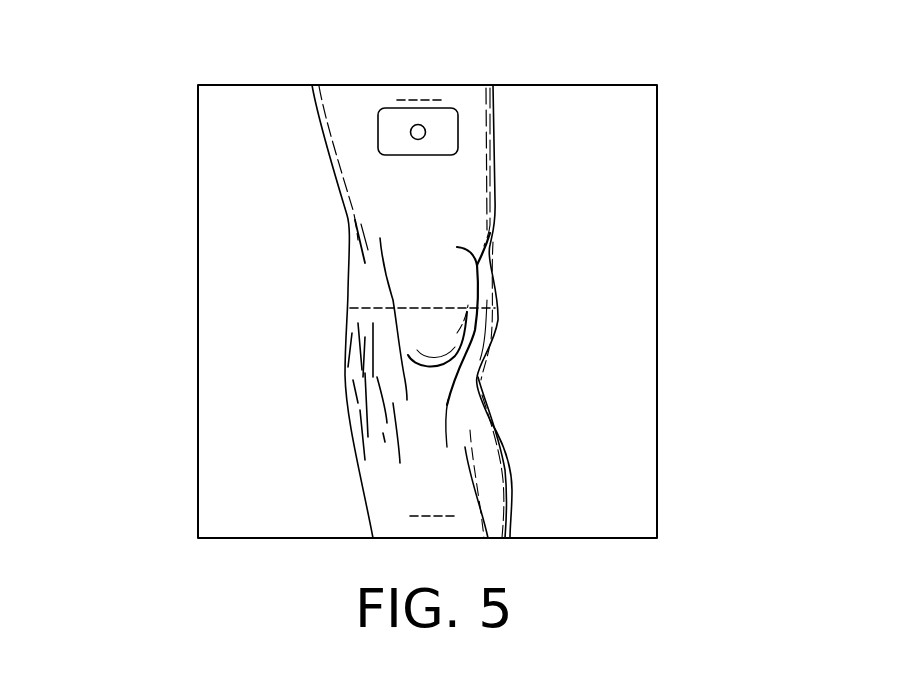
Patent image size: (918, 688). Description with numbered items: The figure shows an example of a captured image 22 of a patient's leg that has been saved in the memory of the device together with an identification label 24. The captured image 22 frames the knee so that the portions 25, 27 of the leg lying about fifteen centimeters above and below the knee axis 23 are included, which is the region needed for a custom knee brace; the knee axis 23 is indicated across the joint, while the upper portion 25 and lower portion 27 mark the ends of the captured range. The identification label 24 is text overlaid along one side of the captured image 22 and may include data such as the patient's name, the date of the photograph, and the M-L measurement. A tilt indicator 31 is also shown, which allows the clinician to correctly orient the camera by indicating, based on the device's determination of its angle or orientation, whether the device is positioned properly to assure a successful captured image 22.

The captured image 22 is at (222, 124).
The knee axis 23 is at (450, 308).
The identification label 24 is at (631, 87).
The upper portion of the leg 25 is at (427, 100).
The lower portion of the leg 27 is at (440, 517).
The tilt indicator 31 is at (378, 122).